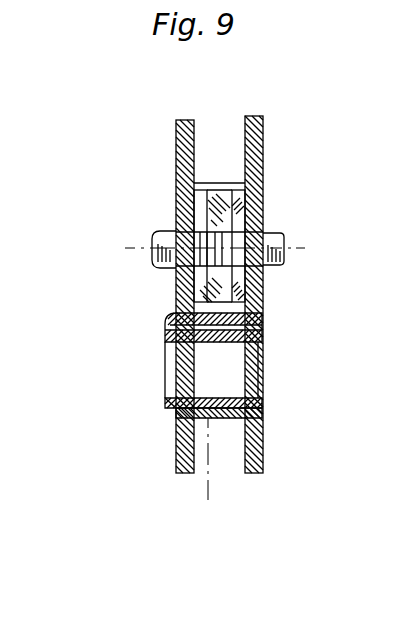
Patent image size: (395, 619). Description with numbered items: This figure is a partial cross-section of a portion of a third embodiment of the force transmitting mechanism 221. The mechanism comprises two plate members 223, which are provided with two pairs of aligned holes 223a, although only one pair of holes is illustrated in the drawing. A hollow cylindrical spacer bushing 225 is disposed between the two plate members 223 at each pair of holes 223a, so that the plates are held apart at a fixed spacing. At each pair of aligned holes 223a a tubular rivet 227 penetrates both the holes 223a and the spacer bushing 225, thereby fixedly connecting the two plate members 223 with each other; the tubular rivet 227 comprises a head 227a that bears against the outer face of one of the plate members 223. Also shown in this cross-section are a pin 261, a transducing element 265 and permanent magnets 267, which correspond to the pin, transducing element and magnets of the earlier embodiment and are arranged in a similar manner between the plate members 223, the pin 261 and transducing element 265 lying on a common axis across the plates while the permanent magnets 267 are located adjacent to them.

The force transmitting mechanism 221 is at (264, 462).
The plate members 223 is at (185, 470).
The aligned holes 223a is at (170, 345).
The spacer bushing 225 is at (208, 500).
The tubular rivet 227 is at (245, 350).
The head 227a is at (165, 405).
The pin 261 is at (270, 236).
The transducing element 265 is at (153, 240).
The permanent magnets 267 is at (220, 192).